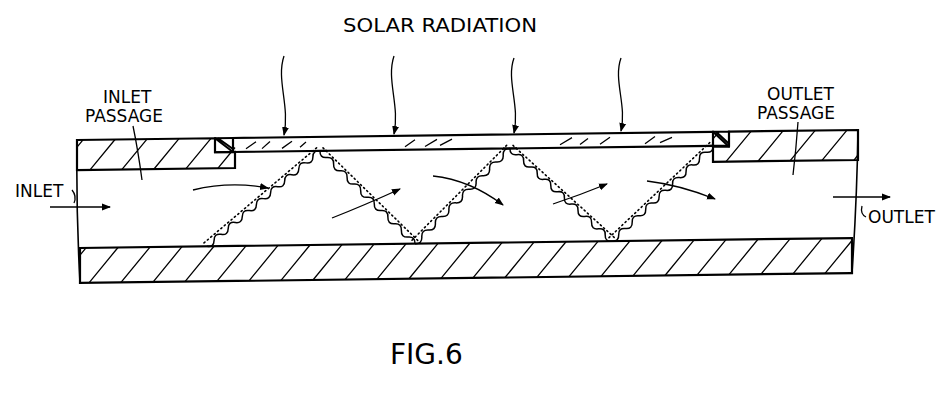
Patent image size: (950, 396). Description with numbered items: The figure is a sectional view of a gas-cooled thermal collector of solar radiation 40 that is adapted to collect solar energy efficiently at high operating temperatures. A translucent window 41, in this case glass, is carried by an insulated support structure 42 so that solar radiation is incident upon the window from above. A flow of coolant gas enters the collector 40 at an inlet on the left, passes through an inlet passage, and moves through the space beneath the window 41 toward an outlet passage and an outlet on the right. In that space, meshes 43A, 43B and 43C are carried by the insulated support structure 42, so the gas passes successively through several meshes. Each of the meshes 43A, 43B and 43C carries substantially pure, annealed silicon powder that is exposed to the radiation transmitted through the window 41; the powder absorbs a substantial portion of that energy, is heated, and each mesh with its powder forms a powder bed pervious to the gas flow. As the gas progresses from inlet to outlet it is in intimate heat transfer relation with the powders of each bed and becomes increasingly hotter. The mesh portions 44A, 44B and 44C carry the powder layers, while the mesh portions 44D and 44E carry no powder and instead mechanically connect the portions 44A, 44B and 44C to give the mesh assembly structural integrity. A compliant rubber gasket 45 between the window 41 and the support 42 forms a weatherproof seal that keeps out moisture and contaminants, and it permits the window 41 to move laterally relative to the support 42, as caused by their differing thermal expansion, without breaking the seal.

The thermal collector of solar radiation 40 is at (668, 285).
The translucent window 41 is at (328, 134).
The insulated support structure 42 is at (77, 144).
The mesh 43A is at (289, 177).
The mesh 43B is at (496, 168).
The mesh 43C is at (694, 162).
The mesh portion 44A is at (246, 212).
The mesh portion 44B is at (452, 216).
The mesh portion 44C is at (643, 215).
The mesh portion 44D is at (349, 176).
The mesh portion 44E is at (554, 160).
The compliant gasket 45 is at (228, 137).